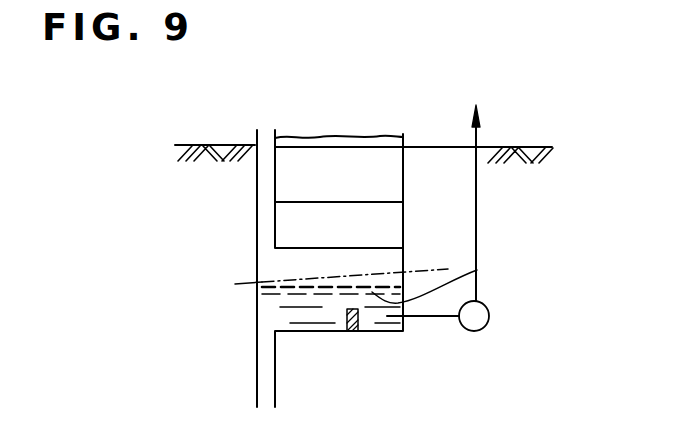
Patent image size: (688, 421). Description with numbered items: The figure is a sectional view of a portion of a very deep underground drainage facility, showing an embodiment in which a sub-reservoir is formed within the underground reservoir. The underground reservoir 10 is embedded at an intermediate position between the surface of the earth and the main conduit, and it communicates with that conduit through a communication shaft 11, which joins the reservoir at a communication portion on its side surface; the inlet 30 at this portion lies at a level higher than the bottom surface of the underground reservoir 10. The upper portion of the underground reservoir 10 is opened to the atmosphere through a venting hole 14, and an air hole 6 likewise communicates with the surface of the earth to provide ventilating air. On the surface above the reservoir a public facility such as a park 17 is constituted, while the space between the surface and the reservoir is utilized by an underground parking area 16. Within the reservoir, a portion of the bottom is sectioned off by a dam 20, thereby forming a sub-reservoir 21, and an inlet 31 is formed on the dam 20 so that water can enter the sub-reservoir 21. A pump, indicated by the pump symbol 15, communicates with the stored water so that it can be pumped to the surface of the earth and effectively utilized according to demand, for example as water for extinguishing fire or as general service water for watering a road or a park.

The air hole 6 is at (416, 268).
The underground reservoir 10 is at (266, 310).
The communication shaft 11 is at (263, 361).
The venting hole 14 is at (264, 210).
The pump 15 is at (489, 316).
The underground parking area 16 is at (363, 218).
The park 17 is at (325, 137).
The dam 20 is at (362, 333).
The sub-reservoir 21 is at (378, 326).
The inlet 30 is at (282, 262).
The inlet 31 is at (477, 270).